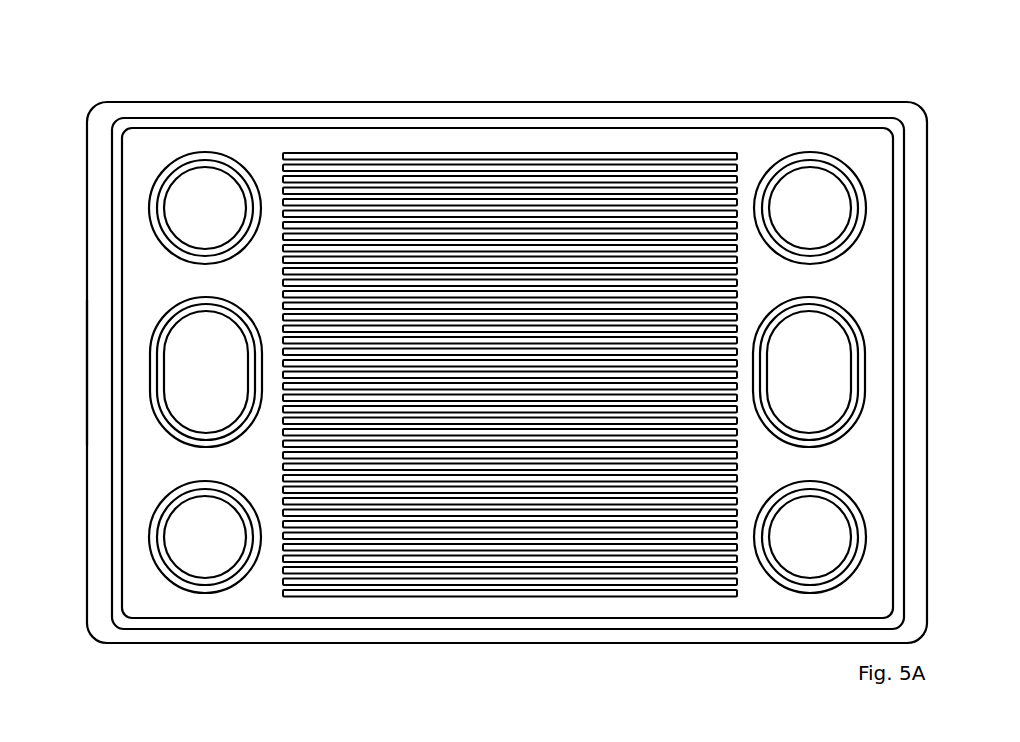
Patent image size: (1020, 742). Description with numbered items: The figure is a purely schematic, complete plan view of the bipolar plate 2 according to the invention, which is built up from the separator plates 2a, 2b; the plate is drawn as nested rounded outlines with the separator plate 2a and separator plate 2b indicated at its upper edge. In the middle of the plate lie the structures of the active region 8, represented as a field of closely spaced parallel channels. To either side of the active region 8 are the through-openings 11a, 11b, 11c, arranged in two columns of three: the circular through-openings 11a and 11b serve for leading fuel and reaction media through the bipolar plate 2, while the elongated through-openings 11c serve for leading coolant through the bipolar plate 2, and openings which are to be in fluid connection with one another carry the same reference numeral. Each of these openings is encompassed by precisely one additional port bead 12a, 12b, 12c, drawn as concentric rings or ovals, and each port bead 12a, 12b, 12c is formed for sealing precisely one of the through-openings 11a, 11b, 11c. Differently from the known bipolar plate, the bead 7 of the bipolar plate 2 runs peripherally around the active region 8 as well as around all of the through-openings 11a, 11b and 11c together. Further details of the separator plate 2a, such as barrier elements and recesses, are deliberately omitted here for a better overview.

The bipolar plate 2 is at (817, 96).
The separator plate 2a is at (749, 101).
The separator plate 2b is at (686, 96).
The bead 7 is at (264, 122).
The active region 8 is at (464, 147).
The through-opening 11a is at (507, 372).
The through-opening 11b is at (507, 372).
The through-opening 11c is at (507, 372).
The port bead 12a is at (863, 206).
The port bead 12b is at (151, 206).
The port bead 12c is at (151, 357).